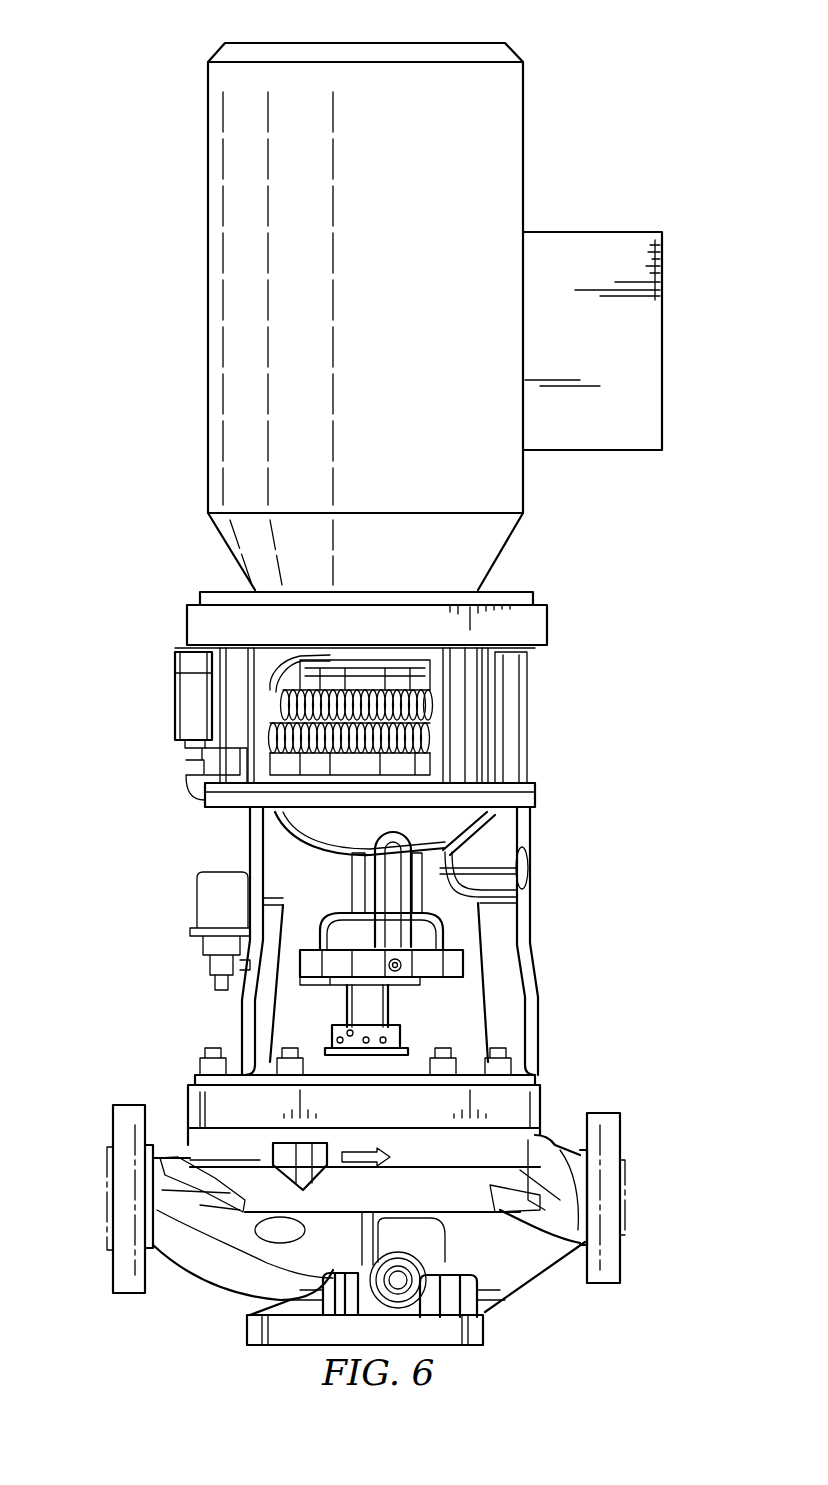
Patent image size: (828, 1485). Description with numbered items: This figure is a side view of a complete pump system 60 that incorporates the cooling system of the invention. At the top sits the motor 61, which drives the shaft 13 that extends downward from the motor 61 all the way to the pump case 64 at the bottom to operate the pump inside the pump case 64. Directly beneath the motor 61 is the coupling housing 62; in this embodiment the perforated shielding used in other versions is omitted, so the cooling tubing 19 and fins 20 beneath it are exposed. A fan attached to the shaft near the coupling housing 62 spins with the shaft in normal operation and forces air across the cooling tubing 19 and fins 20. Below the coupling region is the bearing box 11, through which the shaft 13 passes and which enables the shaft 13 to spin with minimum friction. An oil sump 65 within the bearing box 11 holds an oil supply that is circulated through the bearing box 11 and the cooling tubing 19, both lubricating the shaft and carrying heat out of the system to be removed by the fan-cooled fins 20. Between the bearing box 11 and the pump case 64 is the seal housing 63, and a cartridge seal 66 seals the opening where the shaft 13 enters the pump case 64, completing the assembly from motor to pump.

The pump system 60 is at (160, 18).
The motor 61 is at (523, 183).
The coupling housing 62 is at (547, 632).
The cooling tubing 19 is at (283, 673).
The fins 20 is at (262, 715).
The bearing box 11 is at (530, 912).
The oil sump 65 is at (463, 962).
The shaft 13 is at (388, 1003).
The cartridge seal 66 is at (400, 1030).
The seal housing 63 is at (540, 1097).
The pump case 64 is at (512, 1140).